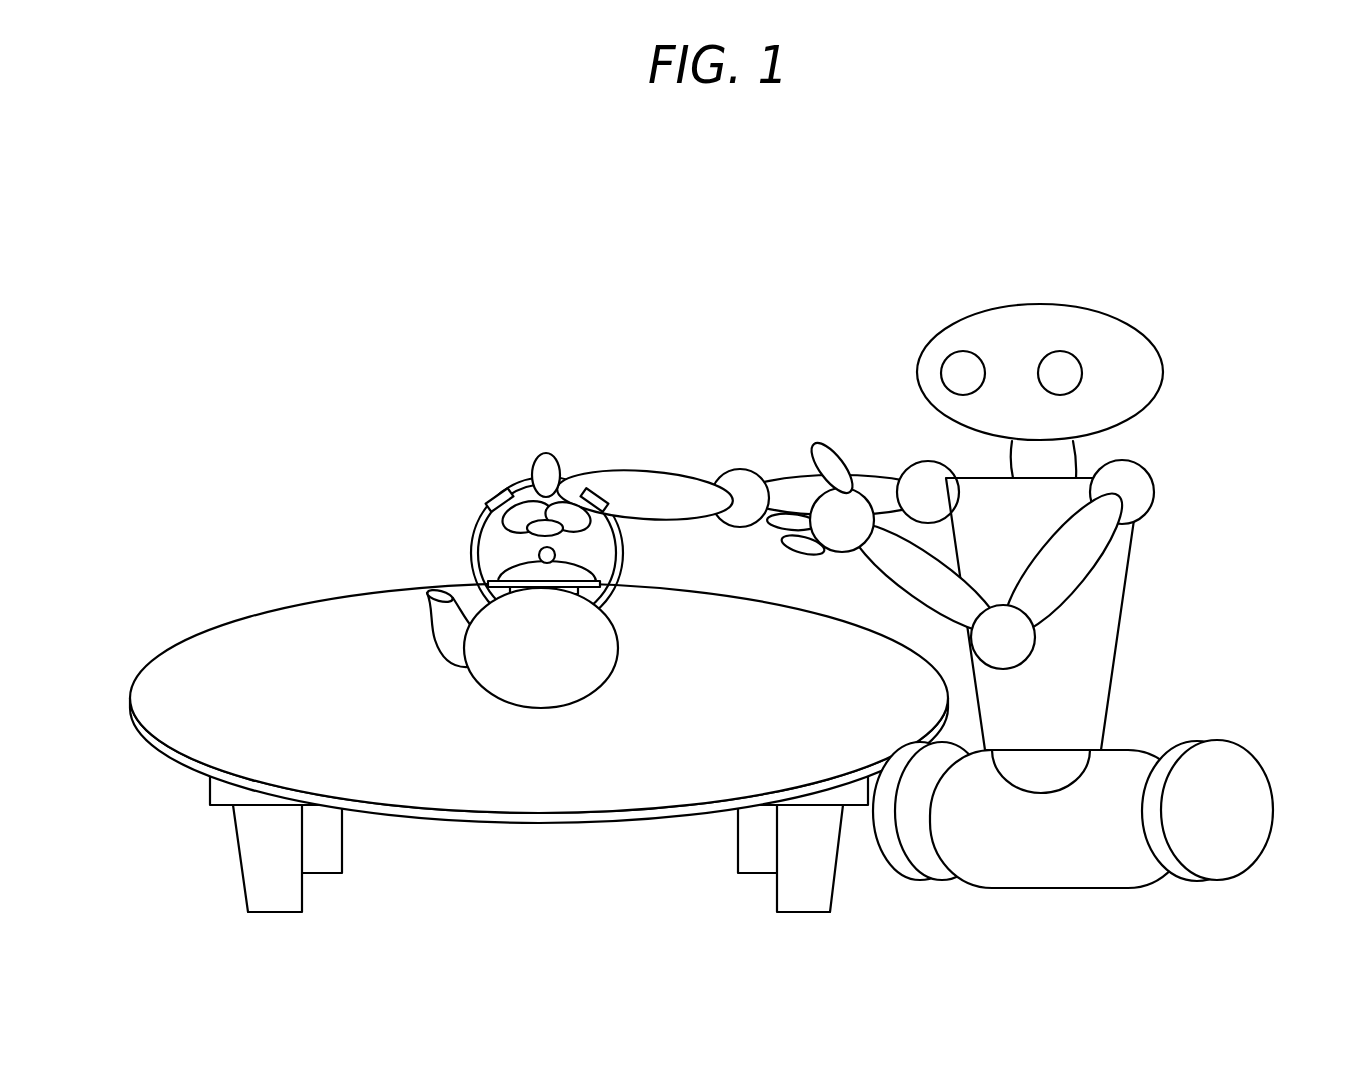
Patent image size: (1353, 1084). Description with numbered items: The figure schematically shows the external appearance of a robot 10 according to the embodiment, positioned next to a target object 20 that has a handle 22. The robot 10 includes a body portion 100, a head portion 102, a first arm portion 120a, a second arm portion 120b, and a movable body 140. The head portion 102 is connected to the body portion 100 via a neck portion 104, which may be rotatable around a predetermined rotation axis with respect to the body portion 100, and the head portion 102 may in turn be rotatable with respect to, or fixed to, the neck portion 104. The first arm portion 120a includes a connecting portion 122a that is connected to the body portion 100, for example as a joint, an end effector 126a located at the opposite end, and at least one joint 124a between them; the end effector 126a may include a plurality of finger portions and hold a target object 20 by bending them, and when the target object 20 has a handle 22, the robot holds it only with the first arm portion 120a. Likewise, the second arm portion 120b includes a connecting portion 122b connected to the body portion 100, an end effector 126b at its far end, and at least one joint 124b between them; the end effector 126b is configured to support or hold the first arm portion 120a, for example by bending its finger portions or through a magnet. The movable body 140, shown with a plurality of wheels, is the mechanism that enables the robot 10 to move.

The robot 10 is at (879, 556).
The target object 20 is at (572, 721).
The handle 22 is at (470, 550).
The body portion 100 is at (870, 490).
The head portion 102 is at (1098, 297).
The neck portion 104 is at (1067, 458).
The first arm portion 120a is at (710, 450).
The second arm portion 120b is at (1000, 564).
The connecting portion 122a is at (925, 472).
The connecting portion 122b is at (1142, 493).
The joint 124a is at (742, 467).
The joint 124b is at (1022, 650).
The end effector 126a is at (545, 445).
The end effector 126b is at (835, 562).
The movable body 140 is at (1262, 907).